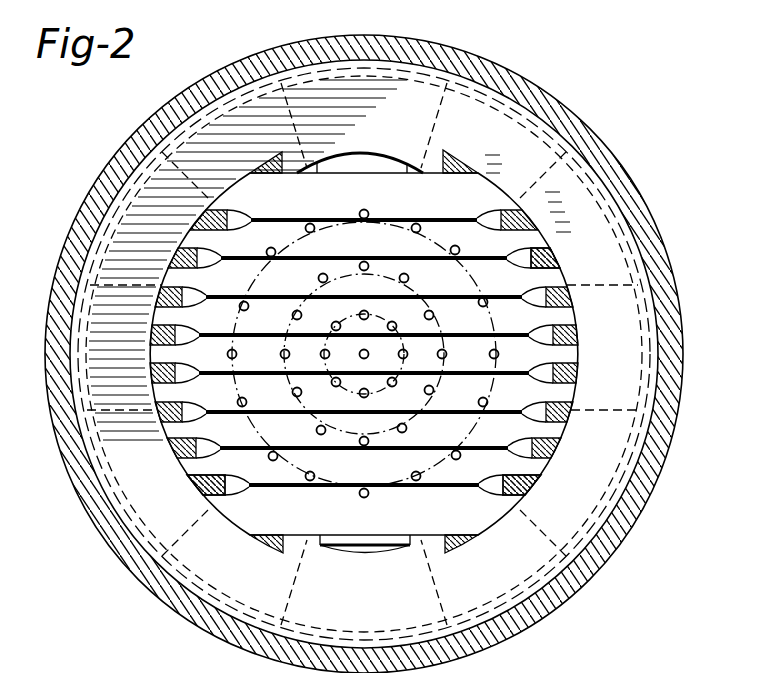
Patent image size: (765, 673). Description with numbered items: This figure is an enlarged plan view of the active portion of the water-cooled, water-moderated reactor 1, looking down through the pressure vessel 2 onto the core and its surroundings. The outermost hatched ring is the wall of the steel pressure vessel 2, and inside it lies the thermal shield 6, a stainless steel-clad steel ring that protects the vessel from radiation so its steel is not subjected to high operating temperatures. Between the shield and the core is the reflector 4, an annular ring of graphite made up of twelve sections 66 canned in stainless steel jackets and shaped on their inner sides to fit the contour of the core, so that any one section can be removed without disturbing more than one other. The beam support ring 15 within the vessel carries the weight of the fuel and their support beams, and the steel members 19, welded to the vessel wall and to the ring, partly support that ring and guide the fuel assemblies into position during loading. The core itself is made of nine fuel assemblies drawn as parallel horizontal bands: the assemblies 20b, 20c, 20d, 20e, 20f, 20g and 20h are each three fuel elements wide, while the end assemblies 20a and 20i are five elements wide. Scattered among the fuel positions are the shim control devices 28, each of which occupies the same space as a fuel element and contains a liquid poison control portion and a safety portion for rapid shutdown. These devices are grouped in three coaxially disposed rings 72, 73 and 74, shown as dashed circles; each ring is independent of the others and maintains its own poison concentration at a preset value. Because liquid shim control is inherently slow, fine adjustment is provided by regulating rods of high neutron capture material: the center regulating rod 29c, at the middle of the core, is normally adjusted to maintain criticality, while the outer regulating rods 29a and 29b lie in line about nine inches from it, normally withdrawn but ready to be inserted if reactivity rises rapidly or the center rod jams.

The reactor 1 is at (70, 188).
The pressure vessel 2 is at (573, 128).
The reflector 4 is at (592, 212).
The thermal shield 6 is at (113, 499).
The beam support ring 15 is at (630, 338).
The steel members 19 is at (566, 268).
The fuel assembly 20a is at (340, 170).
The fuel assembly 20b is at (252, 230).
The fuel assembly 20c is at (310, 265).
The fuel assembly 20d is at (290, 286).
The fuel assembly 20e is at (238, 343).
The fuel assembly 20f is at (215, 358).
The fuel assembly 20g is at (234, 402).
The fuel assembly 20h is at (255, 437).
The fuel assembly 20i is at (268, 468).
The reflector section 66 is at (340, 557).
The shim control device 28 is at (408, 277).
The regulating rod 29a is at (326, 347).
The regulating rod 29b is at (407, 352).
The center regulating rod 29c is at (366, 357).
The ring of shim control devices 72 is at (381, 318).
The ring of shim control devices 73 is at (443, 383).
The ring of shim control devices 74 is at (496, 318).